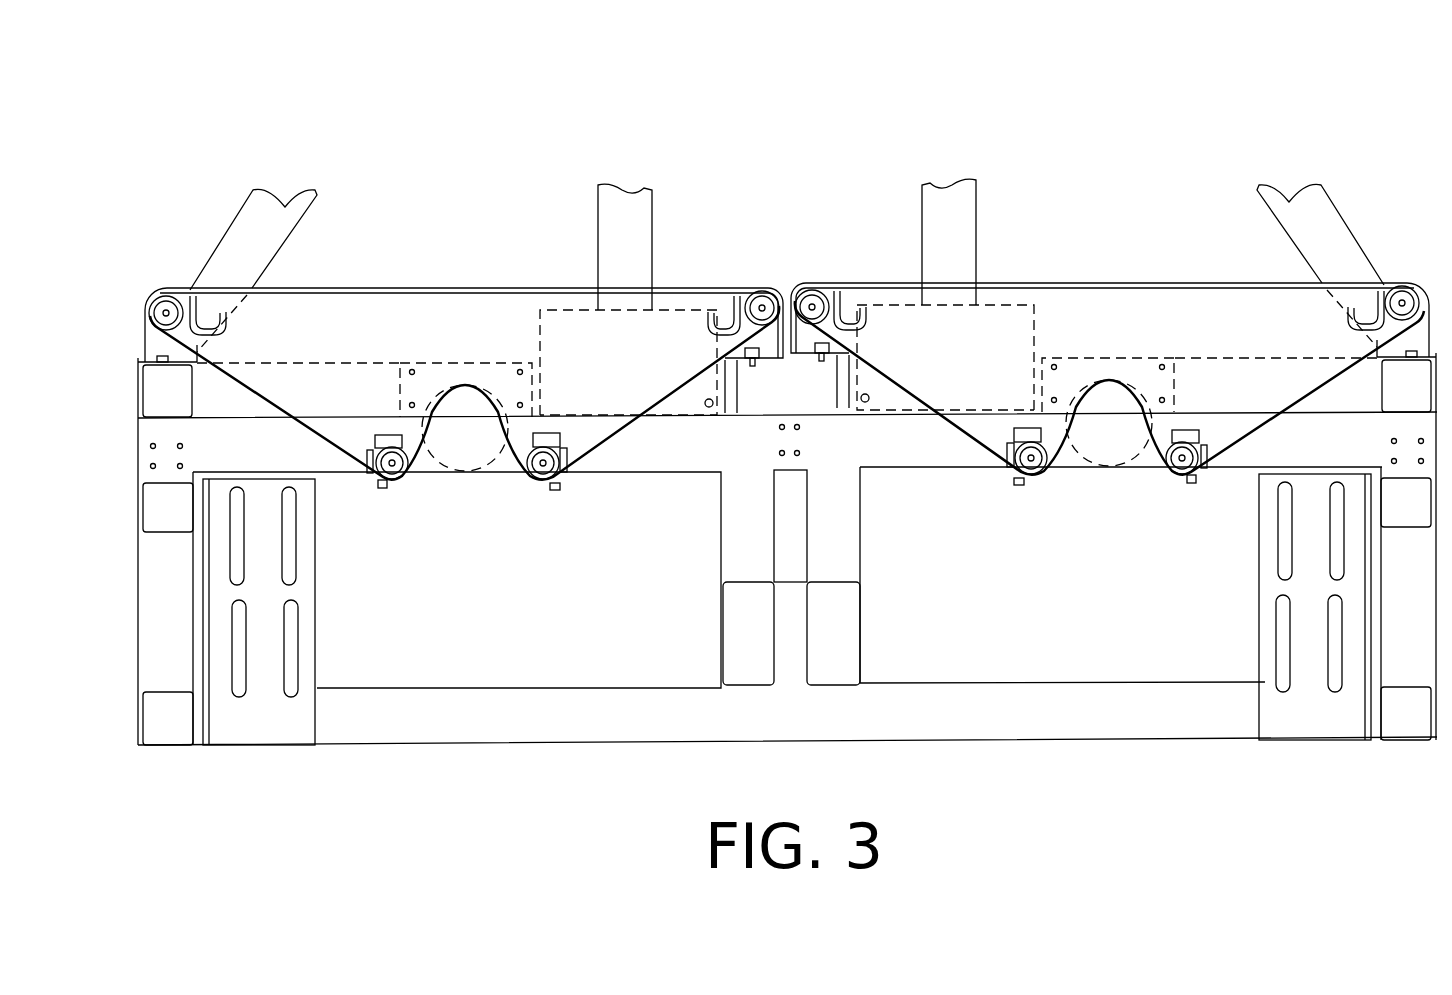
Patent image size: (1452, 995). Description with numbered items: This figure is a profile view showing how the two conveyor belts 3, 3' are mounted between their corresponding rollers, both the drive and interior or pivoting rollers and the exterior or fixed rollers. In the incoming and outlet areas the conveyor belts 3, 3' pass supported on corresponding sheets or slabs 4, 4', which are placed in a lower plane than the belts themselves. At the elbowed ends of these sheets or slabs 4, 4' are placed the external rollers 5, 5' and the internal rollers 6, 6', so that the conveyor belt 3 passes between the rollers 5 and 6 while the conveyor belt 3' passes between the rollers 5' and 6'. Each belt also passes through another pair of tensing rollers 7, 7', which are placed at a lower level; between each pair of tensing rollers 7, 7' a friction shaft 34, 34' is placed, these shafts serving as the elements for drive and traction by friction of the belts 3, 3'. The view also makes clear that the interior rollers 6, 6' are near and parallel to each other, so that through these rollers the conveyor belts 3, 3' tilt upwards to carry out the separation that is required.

The conveyor belt 3 is at (288, 213).
The conveyor belt 3' is at (1283, 224).
The sheet or slab 4 is at (464, 210).
The sheet or slab 4' is at (1110, 204).
The external roller 5 is at (184, 194).
The external roller 5' is at (1371, 185).
The internal roller 6 is at (688, 191).
The internal roller 6' is at (860, 187).
The tensing rollers 7 is at (464, 564).
The tensing rollers 7' is at (1109, 568).
The friction shaft 34 is at (465, 474).
The friction shaft 34' is at (1109, 478).